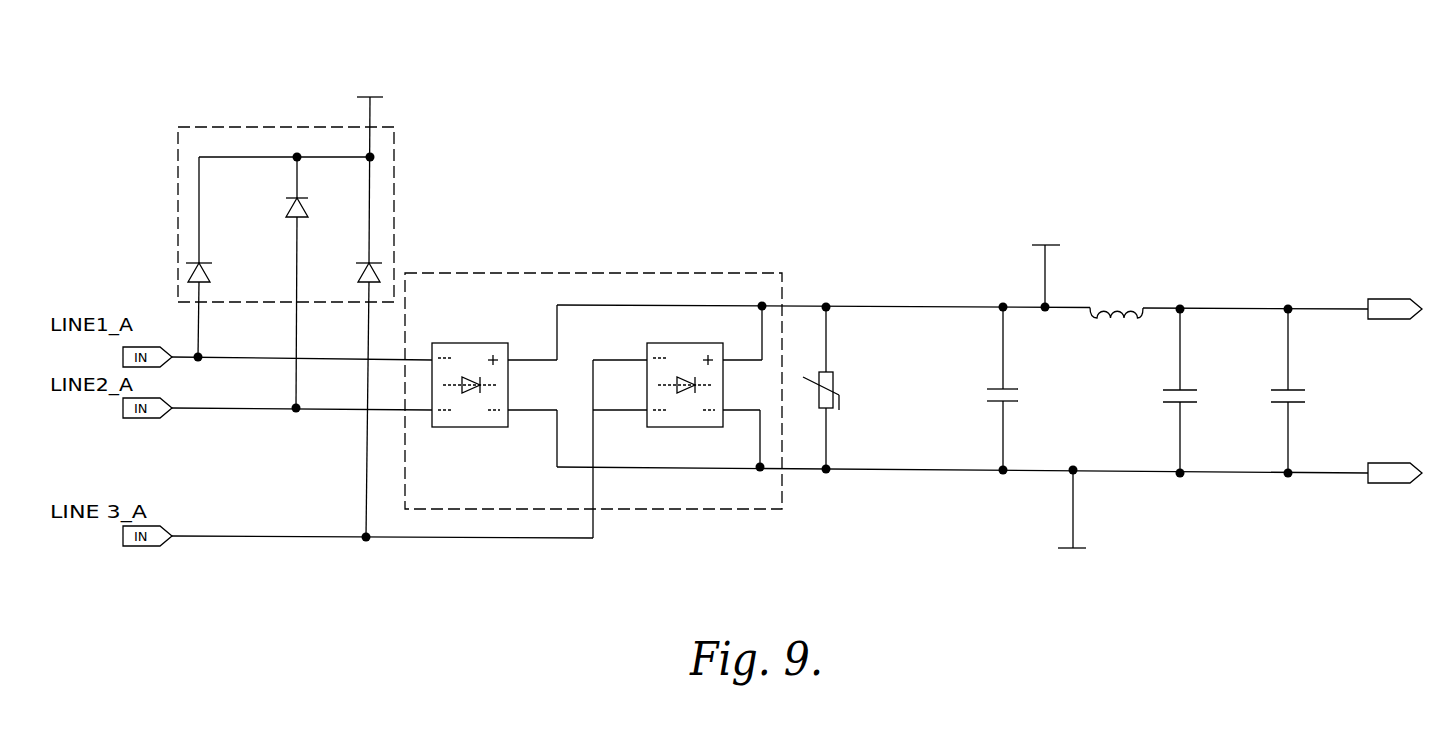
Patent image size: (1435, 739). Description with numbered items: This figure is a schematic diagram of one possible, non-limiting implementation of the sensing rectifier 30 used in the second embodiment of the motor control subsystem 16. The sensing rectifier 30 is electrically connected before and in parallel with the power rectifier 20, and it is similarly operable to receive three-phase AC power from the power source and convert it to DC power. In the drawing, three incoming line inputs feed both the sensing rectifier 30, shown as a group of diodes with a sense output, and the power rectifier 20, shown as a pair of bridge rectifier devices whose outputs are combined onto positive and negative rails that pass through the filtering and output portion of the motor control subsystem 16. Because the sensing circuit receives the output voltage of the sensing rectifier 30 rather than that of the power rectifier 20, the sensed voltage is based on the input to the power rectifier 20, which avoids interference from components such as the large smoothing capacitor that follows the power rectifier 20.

The sensing rectifier 30 is at (211, 123).
The power rectifier 20 is at (705, 262).
The motor control subsystem 16 is at (1007, 146).